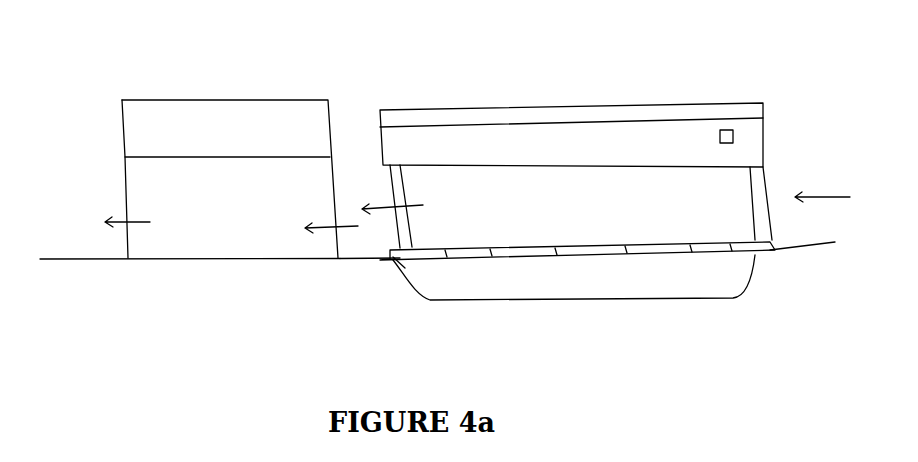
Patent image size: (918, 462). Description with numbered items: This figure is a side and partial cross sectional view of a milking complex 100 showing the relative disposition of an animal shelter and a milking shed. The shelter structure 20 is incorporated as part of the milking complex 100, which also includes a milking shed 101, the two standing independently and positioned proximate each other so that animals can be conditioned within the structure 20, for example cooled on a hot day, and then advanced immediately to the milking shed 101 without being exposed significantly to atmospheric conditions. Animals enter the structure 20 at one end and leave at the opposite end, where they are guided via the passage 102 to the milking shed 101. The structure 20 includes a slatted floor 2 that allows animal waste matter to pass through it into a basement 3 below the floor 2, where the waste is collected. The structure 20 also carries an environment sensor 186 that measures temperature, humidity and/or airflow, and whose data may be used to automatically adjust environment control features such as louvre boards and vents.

The milking complex 100 is at (232, 357).
The milking shed 101 is at (193, 247).
The passage 102 is at (370, 243).
The shelter structure 20 is at (645, 92).
The environment sensor 186 is at (735, 137).
The floor 2 is at (725, 250).
The basement 3 is at (610, 290).